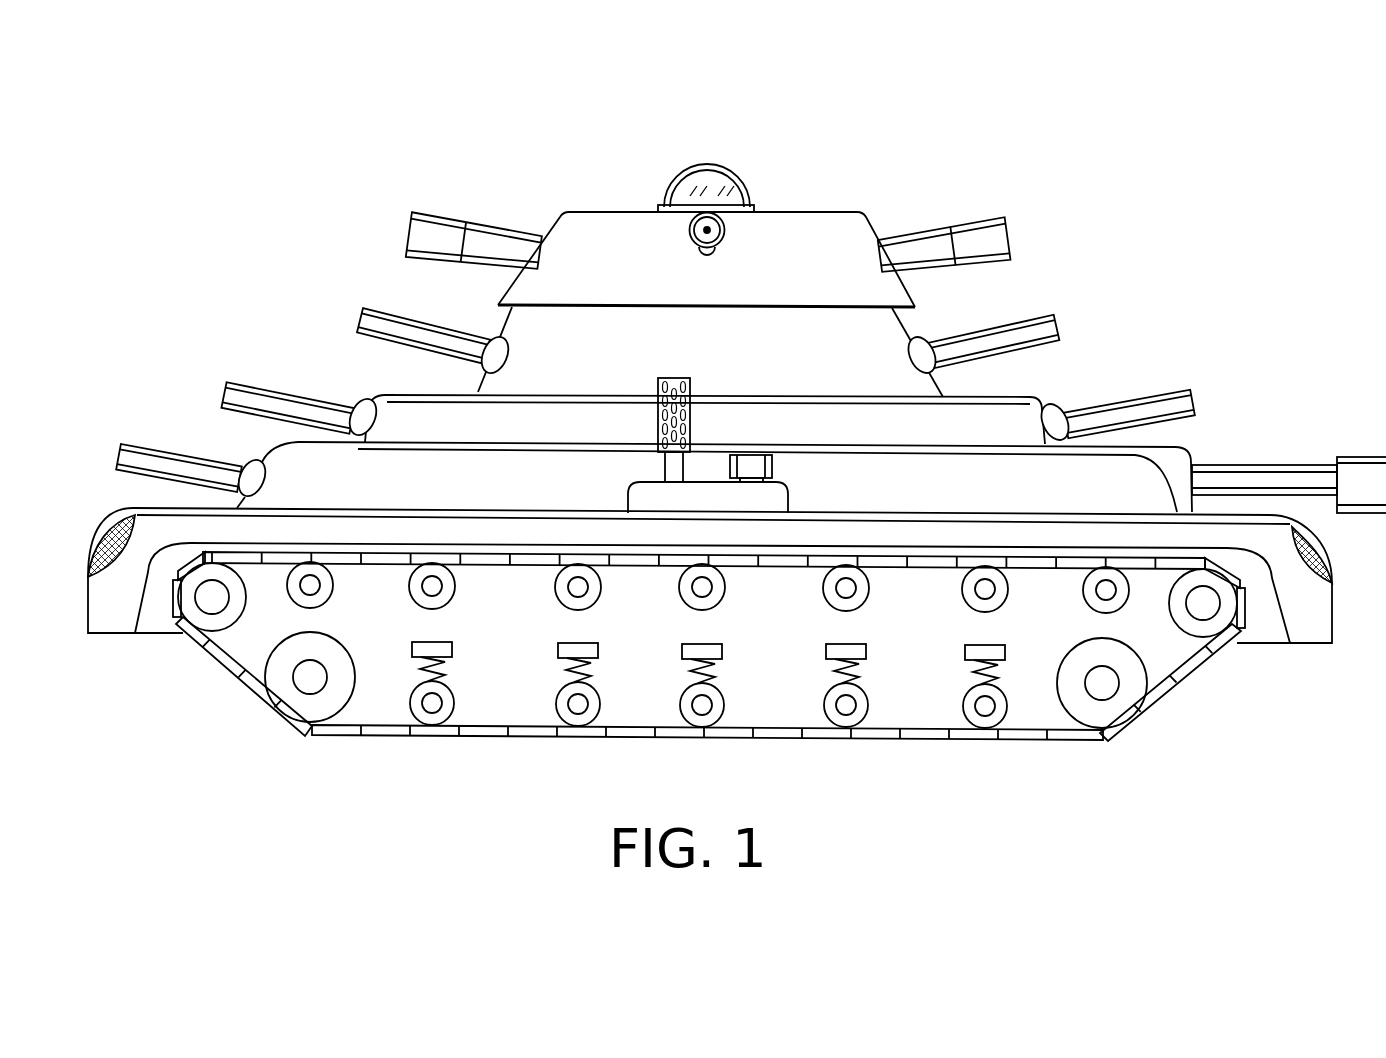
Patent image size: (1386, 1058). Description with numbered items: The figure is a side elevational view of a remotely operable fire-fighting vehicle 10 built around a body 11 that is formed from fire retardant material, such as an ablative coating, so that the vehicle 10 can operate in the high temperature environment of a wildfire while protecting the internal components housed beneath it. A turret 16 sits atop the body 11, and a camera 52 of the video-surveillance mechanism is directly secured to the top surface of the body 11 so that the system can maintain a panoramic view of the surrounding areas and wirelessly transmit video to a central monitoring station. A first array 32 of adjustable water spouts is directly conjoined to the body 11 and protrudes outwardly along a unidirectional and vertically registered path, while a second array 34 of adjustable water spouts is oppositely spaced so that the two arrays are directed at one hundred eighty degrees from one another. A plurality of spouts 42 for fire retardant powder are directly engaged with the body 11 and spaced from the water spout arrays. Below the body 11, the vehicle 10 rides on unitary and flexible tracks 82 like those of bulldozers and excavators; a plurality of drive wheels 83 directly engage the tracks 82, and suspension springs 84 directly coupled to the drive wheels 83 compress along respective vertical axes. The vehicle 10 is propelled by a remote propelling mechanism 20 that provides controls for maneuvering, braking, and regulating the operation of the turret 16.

The vehicle 10 is at (1065, 172).
The body 11 is at (1058, 383).
The turret 16 is at (798, 212).
The propelling mechanism 20 is at (1045, 773).
The first array of adjustable water spouts 32 is at (362, 322).
The second array of adjustable water spouts 34 is at (1060, 328).
The spouts 42 is at (405, 233).
The camera 52 is at (707, 164).
The tracks 82 is at (1185, 692).
The drive wheels 83 is at (432, 703).
The suspension springs 84 is at (418, 676).